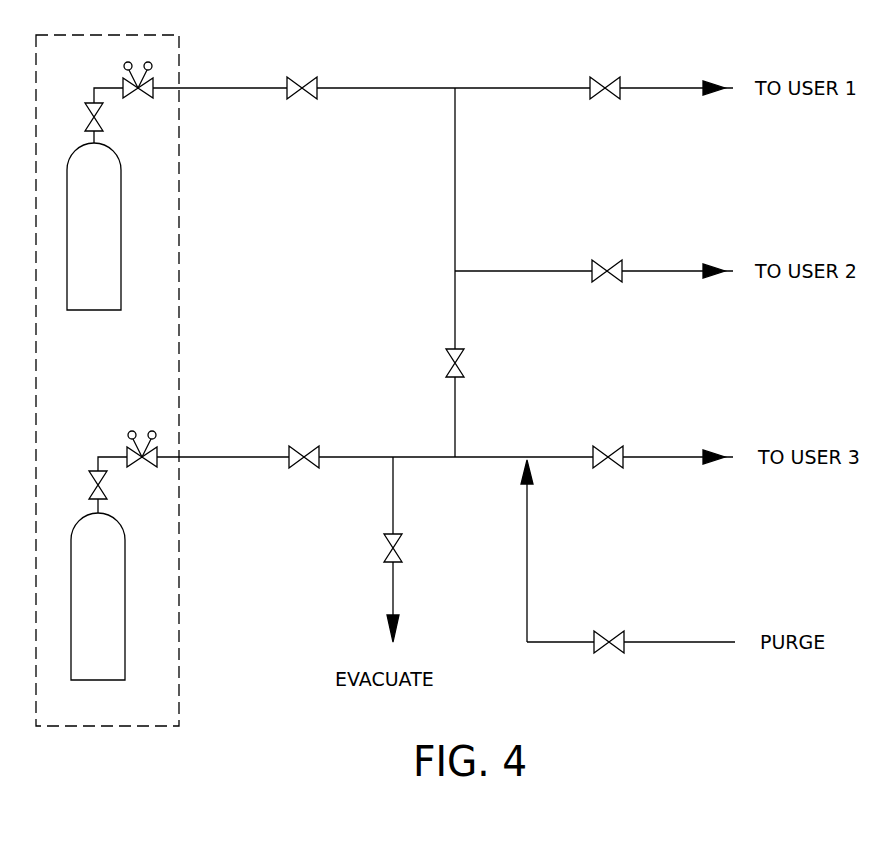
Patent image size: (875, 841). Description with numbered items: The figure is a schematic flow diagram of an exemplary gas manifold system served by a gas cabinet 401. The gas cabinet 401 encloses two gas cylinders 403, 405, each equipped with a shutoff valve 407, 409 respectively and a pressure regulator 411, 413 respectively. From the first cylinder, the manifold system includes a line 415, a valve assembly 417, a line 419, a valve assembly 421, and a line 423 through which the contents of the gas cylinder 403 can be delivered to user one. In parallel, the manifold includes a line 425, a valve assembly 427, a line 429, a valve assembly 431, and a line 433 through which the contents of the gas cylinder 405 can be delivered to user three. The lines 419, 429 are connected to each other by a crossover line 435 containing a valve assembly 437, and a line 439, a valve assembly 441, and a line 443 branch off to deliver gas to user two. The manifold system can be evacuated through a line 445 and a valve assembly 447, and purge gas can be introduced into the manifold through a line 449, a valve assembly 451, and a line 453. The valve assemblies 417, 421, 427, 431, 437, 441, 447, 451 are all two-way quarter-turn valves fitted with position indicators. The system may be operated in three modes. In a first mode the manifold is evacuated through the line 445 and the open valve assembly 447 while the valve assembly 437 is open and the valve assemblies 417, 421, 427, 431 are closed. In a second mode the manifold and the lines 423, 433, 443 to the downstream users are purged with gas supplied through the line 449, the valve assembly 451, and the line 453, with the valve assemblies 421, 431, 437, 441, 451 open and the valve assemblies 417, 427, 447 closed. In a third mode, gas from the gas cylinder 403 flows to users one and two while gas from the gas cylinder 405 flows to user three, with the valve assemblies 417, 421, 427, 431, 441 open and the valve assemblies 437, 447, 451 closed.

The gas cabinet 401 is at (179, 229).
The gas cylinder 403 is at (88, 310).
The gas cylinder 405 is at (95, 680).
The shutoff valve 407 is at (98, 120).
The shutoff valve 409 is at (101, 489).
The pressure regulator 411 is at (143, 96).
The pressure regulator 413 is at (147, 465).
The line 415 is at (241, 88).
The valve assembly 417 is at (304, 95).
The line 419 is at (413, 88).
The valve assembly 421 is at (608, 95).
The line 423 is at (680, 88).
The line 425 is at (237, 457).
The valve assembly 427 is at (306, 464).
The line 429 is at (421, 457).
The valve assembly 431 is at (610, 464).
The line 433 is at (650, 457).
The crossover line 435 is at (455, 226).
The valve assembly 437 is at (458, 365).
The line 439 is at (543, 271).
The valve assembly 441 is at (609, 278).
The line 443 is at (660, 271).
The line 445 is at (393, 517).
The valve assembly 447 is at (397, 553).
The line 449 is at (690, 642).
The valve assembly 451 is at (604, 636).
The line 453 is at (527, 525).